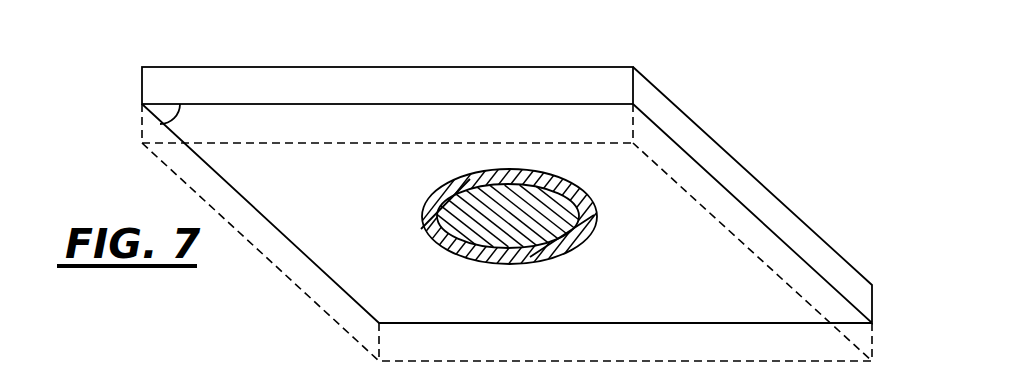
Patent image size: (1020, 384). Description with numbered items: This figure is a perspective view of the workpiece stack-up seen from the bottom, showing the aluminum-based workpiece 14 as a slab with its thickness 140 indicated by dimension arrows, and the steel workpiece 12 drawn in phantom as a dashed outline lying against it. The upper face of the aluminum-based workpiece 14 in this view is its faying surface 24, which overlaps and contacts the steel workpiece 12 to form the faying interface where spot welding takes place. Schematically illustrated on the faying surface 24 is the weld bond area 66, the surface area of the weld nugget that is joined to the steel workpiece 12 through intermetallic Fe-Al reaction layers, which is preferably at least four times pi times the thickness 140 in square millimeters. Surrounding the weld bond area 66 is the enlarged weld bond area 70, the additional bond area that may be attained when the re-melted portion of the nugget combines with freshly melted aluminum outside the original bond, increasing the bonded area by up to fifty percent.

The aluminum-based workpiece 14 is at (142, 80).
The faying surface 24 is at (163, 125).
The steel workpiece 12 is at (160, 160).
The thickness 140 is at (223, 37).
The enlarged weld bond area 70 is at (426, 239).
The weld bond area 66 is at (579, 211).